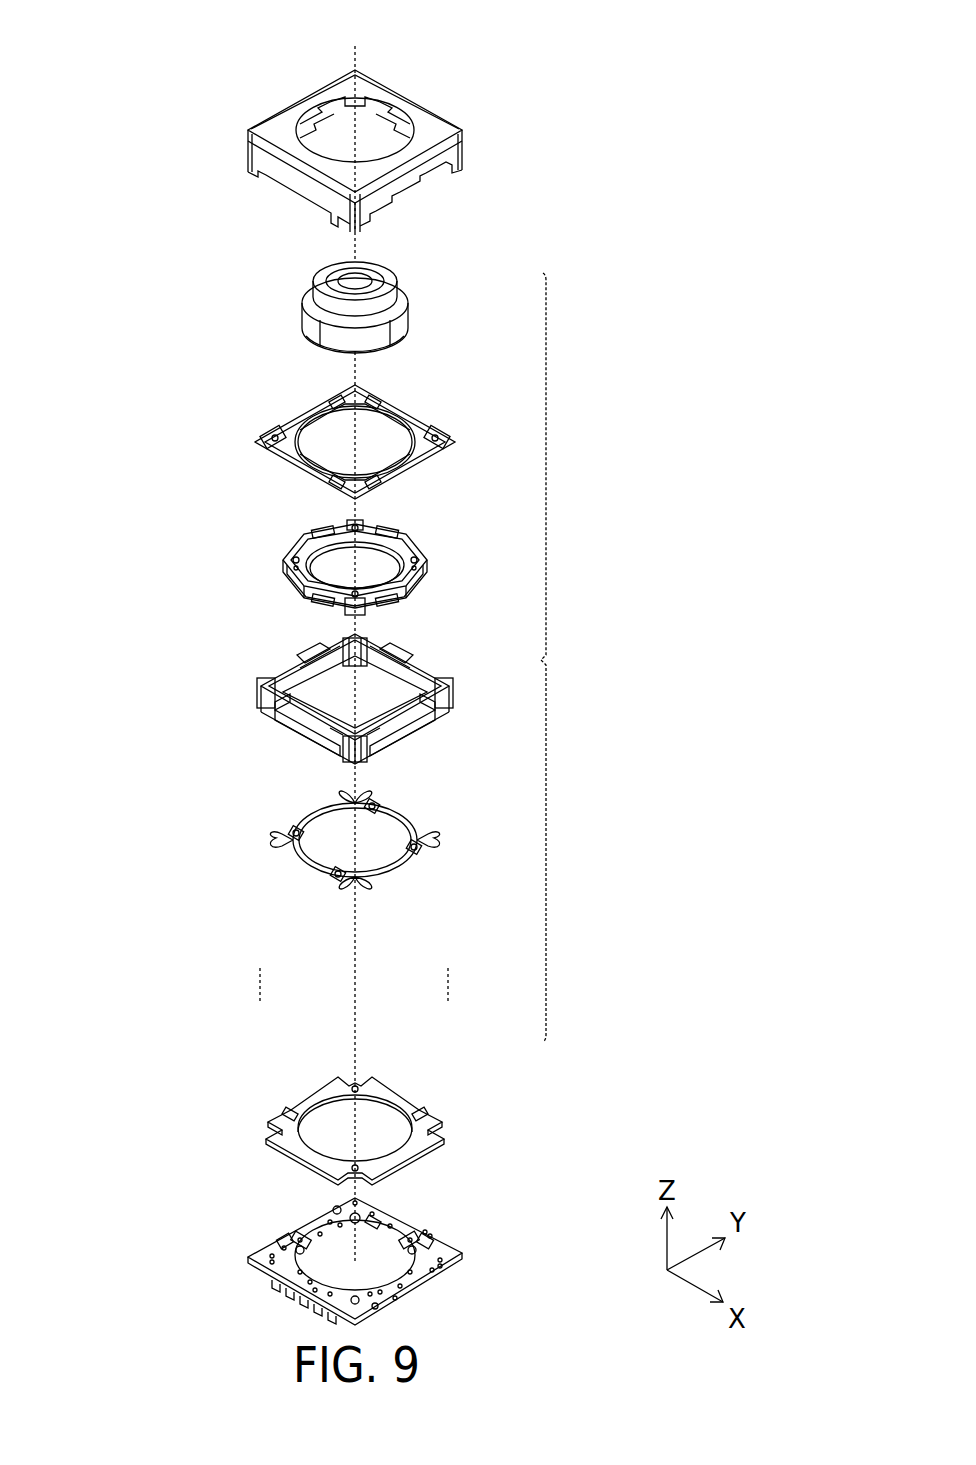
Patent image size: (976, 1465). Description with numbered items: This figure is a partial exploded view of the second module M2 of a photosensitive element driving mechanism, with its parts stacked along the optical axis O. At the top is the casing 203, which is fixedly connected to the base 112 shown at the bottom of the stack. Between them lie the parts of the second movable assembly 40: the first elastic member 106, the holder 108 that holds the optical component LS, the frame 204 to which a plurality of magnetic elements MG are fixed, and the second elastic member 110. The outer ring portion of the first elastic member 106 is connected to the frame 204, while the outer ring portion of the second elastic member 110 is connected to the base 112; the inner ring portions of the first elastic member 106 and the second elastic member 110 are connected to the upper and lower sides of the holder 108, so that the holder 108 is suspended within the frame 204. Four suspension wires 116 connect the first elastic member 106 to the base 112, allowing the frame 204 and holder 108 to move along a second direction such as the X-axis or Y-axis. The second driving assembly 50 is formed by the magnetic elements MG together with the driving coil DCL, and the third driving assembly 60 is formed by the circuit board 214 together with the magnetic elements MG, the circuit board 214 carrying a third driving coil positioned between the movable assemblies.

The second module M2 is at (65, 37).
The optical axis O is at (356, 640).
The casing 203 is at (458, 143).
The optical component LS is at (410, 318).
The first elastic member 106 is at (428, 432).
The holder 108 is at (420, 545).
The driving coil DCL is at (290, 586).
The frame 204 is at (430, 673).
The magnetic elements MG is at (292, 720).
The second elastic member 110 is at (432, 832).
The suspension wires 116 is at (452, 985).
The second movable assembly 40 is at (563, 657).
The circuit board 214 is at (436, 1118).
The base 112 is at (438, 1250).
The second driving assembly 50 is at (700, 800).
The third driving assembly 60 is at (700, 904).